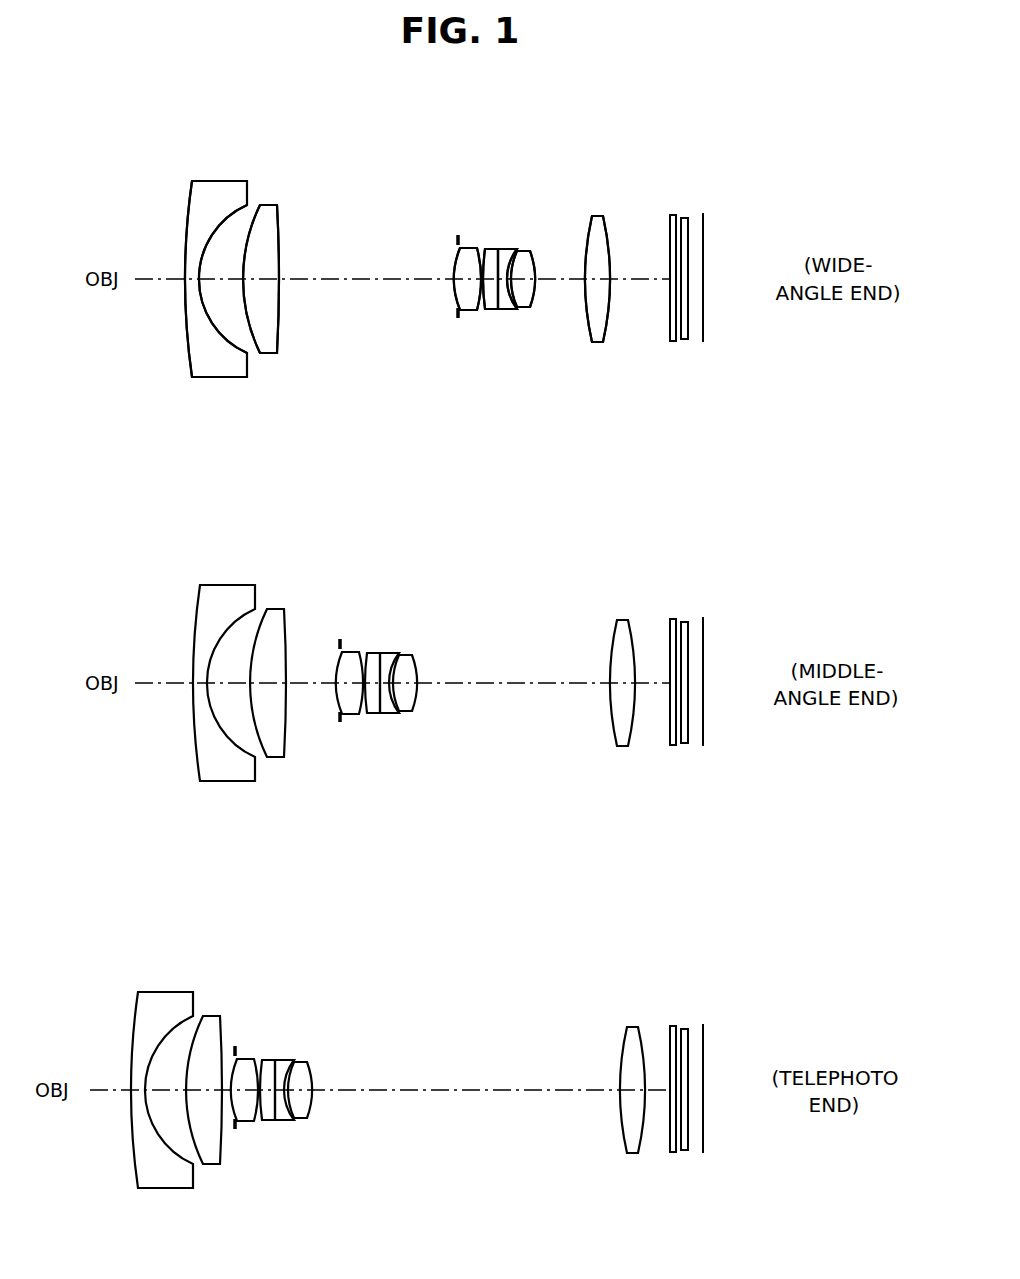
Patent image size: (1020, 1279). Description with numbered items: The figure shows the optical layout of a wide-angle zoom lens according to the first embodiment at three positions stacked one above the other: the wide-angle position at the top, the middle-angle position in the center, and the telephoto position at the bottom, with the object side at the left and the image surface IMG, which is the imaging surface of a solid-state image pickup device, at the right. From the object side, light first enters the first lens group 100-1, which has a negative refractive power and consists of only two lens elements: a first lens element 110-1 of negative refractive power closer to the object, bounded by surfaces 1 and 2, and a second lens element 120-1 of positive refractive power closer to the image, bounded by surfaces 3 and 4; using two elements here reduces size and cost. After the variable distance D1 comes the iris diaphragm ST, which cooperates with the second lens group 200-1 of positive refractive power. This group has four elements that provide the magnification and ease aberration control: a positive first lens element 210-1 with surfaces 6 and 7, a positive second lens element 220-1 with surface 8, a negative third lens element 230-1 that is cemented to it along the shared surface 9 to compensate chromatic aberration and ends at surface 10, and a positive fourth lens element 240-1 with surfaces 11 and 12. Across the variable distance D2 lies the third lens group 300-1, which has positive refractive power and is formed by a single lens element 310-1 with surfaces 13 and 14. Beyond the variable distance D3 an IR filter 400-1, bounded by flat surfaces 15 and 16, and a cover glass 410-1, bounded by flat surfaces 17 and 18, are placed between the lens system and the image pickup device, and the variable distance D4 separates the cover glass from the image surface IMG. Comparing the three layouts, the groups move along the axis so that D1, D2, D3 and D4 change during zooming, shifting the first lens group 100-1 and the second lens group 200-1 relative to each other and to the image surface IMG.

The first lens group 100-1 is at (183, 159).
The first lens element 110-1 is at (217, 368).
The second lens element 120-1 is at (267, 345).
The plane 1 is at (186, 340).
The plane 2 is at (203, 310).
The plane 3 is at (250, 248).
The plane 4 is at (275, 257).
The second lens group 200-1 is at (453, 173).
The iris diaphragm ST is at (458, 240).
The first lens element 210-1 is at (462, 317).
The second lens element 220-1 is at (490, 306).
The third lens element 230-1 is at (503, 306).
The fourth lens element 240-1 is at (525, 306).
The plane 6 is at (478, 265).
The plane 7 is at (472, 275).
The plane 8 is at (495, 272).
The plane 9 is at (515, 262).
The plane 10 is at (522, 254).
The plane 11 is at (522, 264).
The plane 12 is at (535, 273).
The third lens group 300-1 is at (615, 172).
The lens element 310-1 is at (599, 343).
The plane 13 is at (598, 257).
The plane 14 is at (612, 262).
The IR filter 400-1 is at (673, 217).
The cover glass 410-1 is at (684, 218).
The plane 15 is at (672, 233).
The plane 16 is at (680, 247).
The plane 17 is at (688, 260).
The plane 18 is at (690, 273).
The variable distance D1 is at (373, 282).
The variable distance D2 is at (572, 282).
The variable distance D3 is at (638, 282).
The variable distance D4 is at (694, 282).
The image surface IMG is at (703, 320).